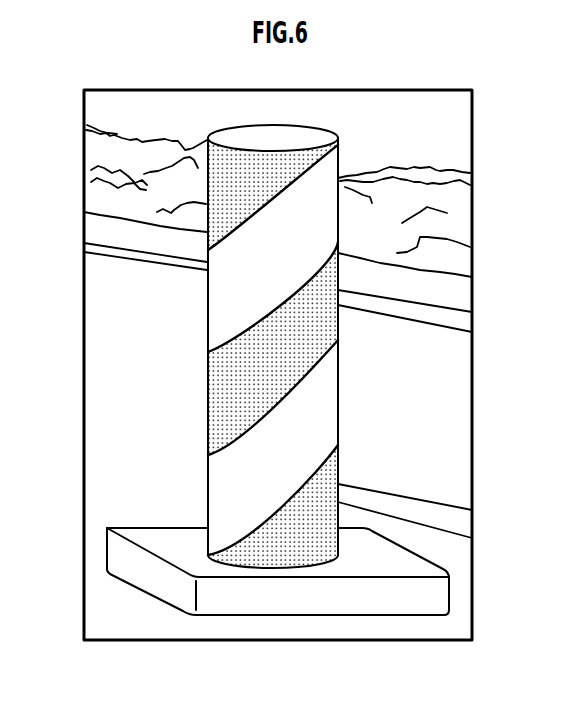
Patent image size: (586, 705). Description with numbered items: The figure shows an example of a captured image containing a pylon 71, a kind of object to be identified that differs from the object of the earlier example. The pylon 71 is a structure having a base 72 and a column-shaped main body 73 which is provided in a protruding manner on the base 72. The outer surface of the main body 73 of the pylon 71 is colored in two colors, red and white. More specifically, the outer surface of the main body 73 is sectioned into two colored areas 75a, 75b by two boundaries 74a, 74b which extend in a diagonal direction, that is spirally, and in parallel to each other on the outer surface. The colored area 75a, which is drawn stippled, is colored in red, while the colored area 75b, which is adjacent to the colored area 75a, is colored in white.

The pylon 71 is at (194, 414).
The base 72 is at (157, 585).
The main body 73 is at (207, 372).
The boundary 74a is at (242, 227).
The boundary 74b is at (245, 333).
The colored area 75a is at (287, 150).
The colored area 75b is at (218, 295).